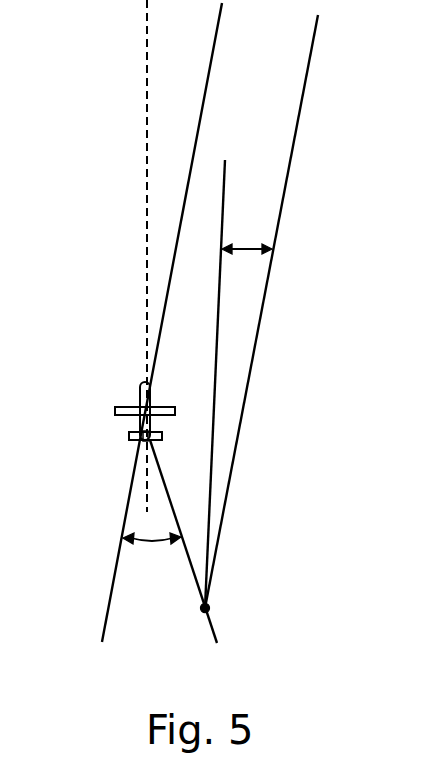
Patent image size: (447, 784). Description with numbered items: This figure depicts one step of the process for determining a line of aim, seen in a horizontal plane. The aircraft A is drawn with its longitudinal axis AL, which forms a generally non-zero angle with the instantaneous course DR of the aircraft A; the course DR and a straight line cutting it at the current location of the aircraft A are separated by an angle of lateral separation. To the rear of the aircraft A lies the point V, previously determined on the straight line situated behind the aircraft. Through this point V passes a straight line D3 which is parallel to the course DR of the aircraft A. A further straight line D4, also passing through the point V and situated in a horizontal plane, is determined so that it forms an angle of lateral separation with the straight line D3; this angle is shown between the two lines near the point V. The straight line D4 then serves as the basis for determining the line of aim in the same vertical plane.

The longitudinal axis AL is at (147, 96).
The instantaneous course DR is at (212, 67).
The straight line D3 is at (272, 278).
The straight line D4 is at (216, 367).
The angle of lateral separation Va is at (247, 232).
The aircraft A is at (140, 392).
The point V is at (209, 606).